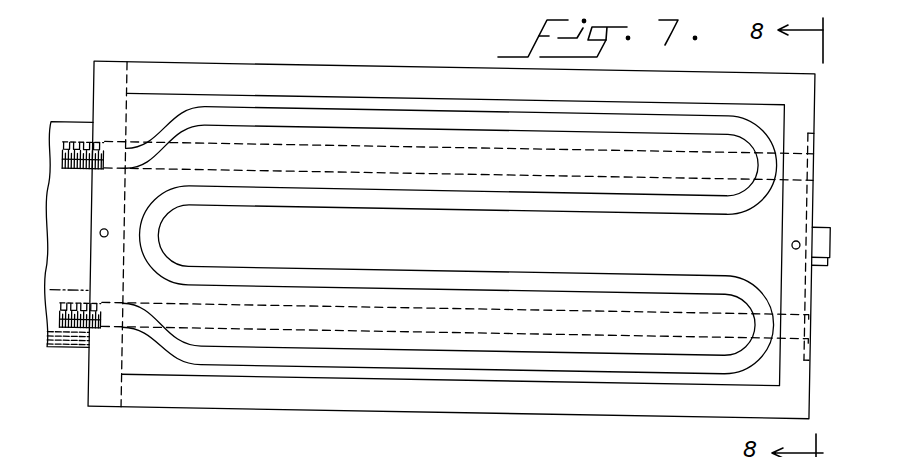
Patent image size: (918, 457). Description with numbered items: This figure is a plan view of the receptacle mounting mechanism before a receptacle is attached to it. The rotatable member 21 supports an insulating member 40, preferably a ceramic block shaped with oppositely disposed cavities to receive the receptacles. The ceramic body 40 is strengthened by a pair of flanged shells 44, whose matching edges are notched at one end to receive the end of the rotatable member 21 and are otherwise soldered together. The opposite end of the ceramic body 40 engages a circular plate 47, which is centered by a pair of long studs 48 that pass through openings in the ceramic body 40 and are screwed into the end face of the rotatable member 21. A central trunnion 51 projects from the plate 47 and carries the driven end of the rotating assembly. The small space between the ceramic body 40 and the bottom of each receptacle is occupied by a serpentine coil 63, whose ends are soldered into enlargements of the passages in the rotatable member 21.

The rotatable member 21 is at (61, 133).
The insulating member 40 is at (482, 246).
The flanged shells 44 is at (325, 71).
The circular plate 47 is at (810, 276).
The long studs 48 is at (488, 150).
The central trunnion 51 is at (818, 221).
The serpentine coil 63 is at (305, 275).